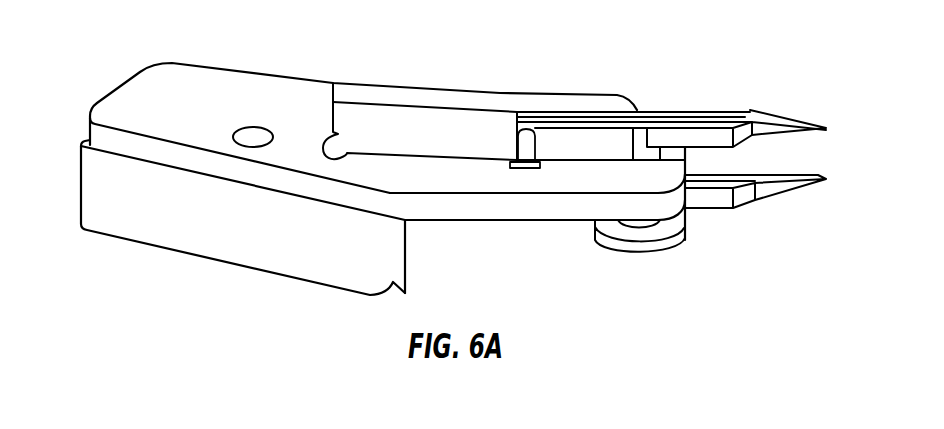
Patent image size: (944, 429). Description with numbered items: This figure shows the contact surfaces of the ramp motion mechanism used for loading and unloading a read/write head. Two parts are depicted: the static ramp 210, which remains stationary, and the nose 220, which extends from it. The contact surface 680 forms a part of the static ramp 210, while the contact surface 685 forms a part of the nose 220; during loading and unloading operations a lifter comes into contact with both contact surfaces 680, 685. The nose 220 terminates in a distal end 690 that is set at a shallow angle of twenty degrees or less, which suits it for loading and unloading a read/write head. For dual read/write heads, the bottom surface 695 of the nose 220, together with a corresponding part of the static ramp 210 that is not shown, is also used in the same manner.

The static ramp 210 is at (113, 223).
The nose 220 is at (584, 143).
The contact surface 680 is at (468, 100).
The contact surface 685 is at (678, 110).
The distal end 690 is at (787, 132).
The bottom surface 695 is at (787, 195).